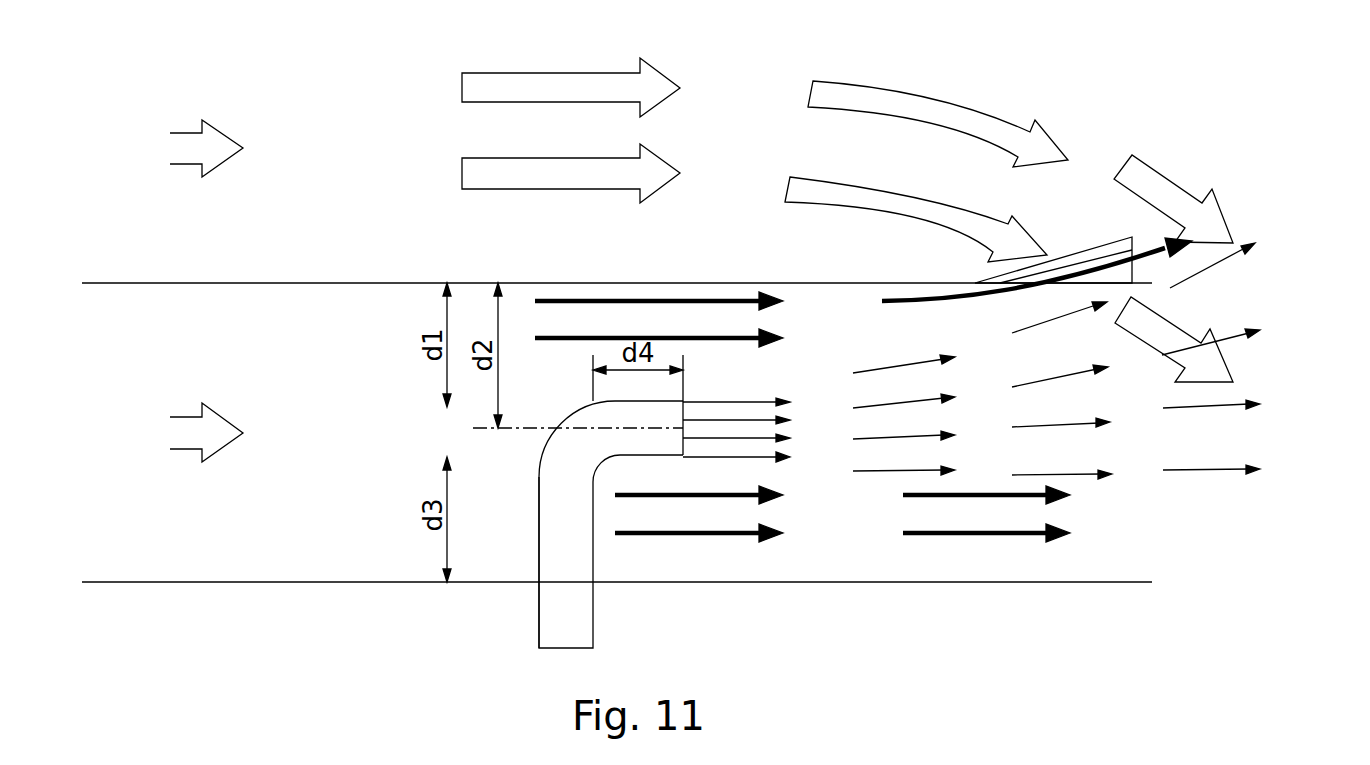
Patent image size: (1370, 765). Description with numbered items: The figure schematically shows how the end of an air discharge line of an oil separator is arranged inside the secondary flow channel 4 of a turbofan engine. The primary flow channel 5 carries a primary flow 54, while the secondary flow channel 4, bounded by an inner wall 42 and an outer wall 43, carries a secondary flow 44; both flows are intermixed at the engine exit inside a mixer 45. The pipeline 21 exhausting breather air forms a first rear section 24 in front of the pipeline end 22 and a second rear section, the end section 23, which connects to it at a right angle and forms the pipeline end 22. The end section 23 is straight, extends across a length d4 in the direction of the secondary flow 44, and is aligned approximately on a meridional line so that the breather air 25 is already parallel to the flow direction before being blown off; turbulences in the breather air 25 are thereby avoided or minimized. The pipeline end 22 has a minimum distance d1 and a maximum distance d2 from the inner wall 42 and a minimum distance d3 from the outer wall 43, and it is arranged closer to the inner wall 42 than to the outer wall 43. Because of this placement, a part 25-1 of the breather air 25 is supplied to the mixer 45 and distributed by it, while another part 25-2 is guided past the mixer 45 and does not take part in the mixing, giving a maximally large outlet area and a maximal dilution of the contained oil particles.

The secondary flow channel 4 is at (330, 446).
The primary flow channel 5 is at (299, 156).
The pipeline 21 is at (593, 612).
The pipeline end 22 is at (685, 457).
The end section 23 is at (653, 457).
The first rear section 24 is at (539, 530).
The breather air 25 is at (768, 400).
The part of the breather air 25-1 is at (1282, 283).
The another part of the breather air 25-2 is at (1282, 400).
The inner wall 42 is at (218, 283).
The outer wall 43 is at (222, 582).
The secondary flow 44 is at (223, 412).
The mixer 45 is at (1077, 262).
The primary flow 54 is at (223, 128).